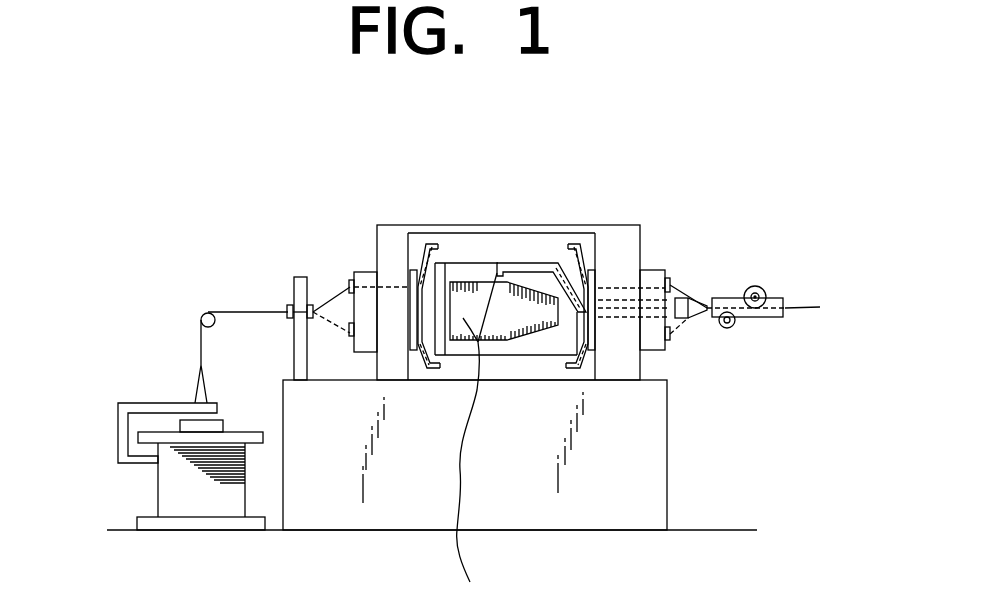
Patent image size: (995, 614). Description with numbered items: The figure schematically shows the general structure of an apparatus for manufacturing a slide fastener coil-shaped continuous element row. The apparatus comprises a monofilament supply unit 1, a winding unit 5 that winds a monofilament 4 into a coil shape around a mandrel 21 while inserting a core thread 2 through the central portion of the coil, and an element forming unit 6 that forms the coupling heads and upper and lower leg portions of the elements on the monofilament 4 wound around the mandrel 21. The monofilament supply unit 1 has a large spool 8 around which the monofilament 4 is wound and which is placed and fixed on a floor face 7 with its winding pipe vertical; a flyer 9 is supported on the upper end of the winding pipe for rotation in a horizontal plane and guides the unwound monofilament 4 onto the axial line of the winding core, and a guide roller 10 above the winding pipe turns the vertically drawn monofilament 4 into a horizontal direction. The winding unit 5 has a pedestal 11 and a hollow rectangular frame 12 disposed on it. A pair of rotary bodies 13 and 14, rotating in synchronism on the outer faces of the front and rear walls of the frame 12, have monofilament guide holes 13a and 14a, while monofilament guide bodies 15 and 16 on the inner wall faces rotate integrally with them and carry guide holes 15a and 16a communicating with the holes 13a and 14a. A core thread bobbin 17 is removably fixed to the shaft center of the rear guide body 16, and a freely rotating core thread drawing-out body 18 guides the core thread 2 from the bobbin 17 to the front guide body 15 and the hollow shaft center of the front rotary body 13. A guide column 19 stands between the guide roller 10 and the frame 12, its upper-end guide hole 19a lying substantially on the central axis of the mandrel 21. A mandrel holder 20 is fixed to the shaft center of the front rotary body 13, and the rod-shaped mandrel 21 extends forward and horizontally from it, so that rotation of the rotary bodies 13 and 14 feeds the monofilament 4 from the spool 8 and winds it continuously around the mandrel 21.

The monofilament supply unit 1 is at (158, 380).
The core thread 2 is at (490, 305).
The monofilament 4 is at (247, 312).
The winding unit 5 is at (578, 150).
The element forming unit 6 is at (777, 278).
The floor face 7 is at (273, 531).
The spool 8 is at (247, 432).
The flyer 9 is at (123, 437).
The guide roller 10 is at (207, 312).
The pedestal 11 is at (648, 473).
The hollow rectangular frame 12 is at (610, 237).
The front rotary body 13 is at (649, 270).
The monofilament guide hole 13a is at (672, 282).
The rear rotary body 14 is at (367, 272).
The monofilament guide hole 14a is at (350, 285).
The front monofilament guide body 15 is at (580, 244).
The monofilament guide hole 15a is at (562, 262).
The rear monofilament guide body 16 is at (422, 244).
The monofilament guide hole 16a is at (447, 262).
The core thread bobbin 17 is at (473, 464).
The core thread drawing-out body 18 is at (497, 263).
The guide column 19 is at (308, 360).
The guide hole 19a is at (290, 312).
The mandrel holder 20 is at (693, 310).
The mandrel 21 is at (717, 293).